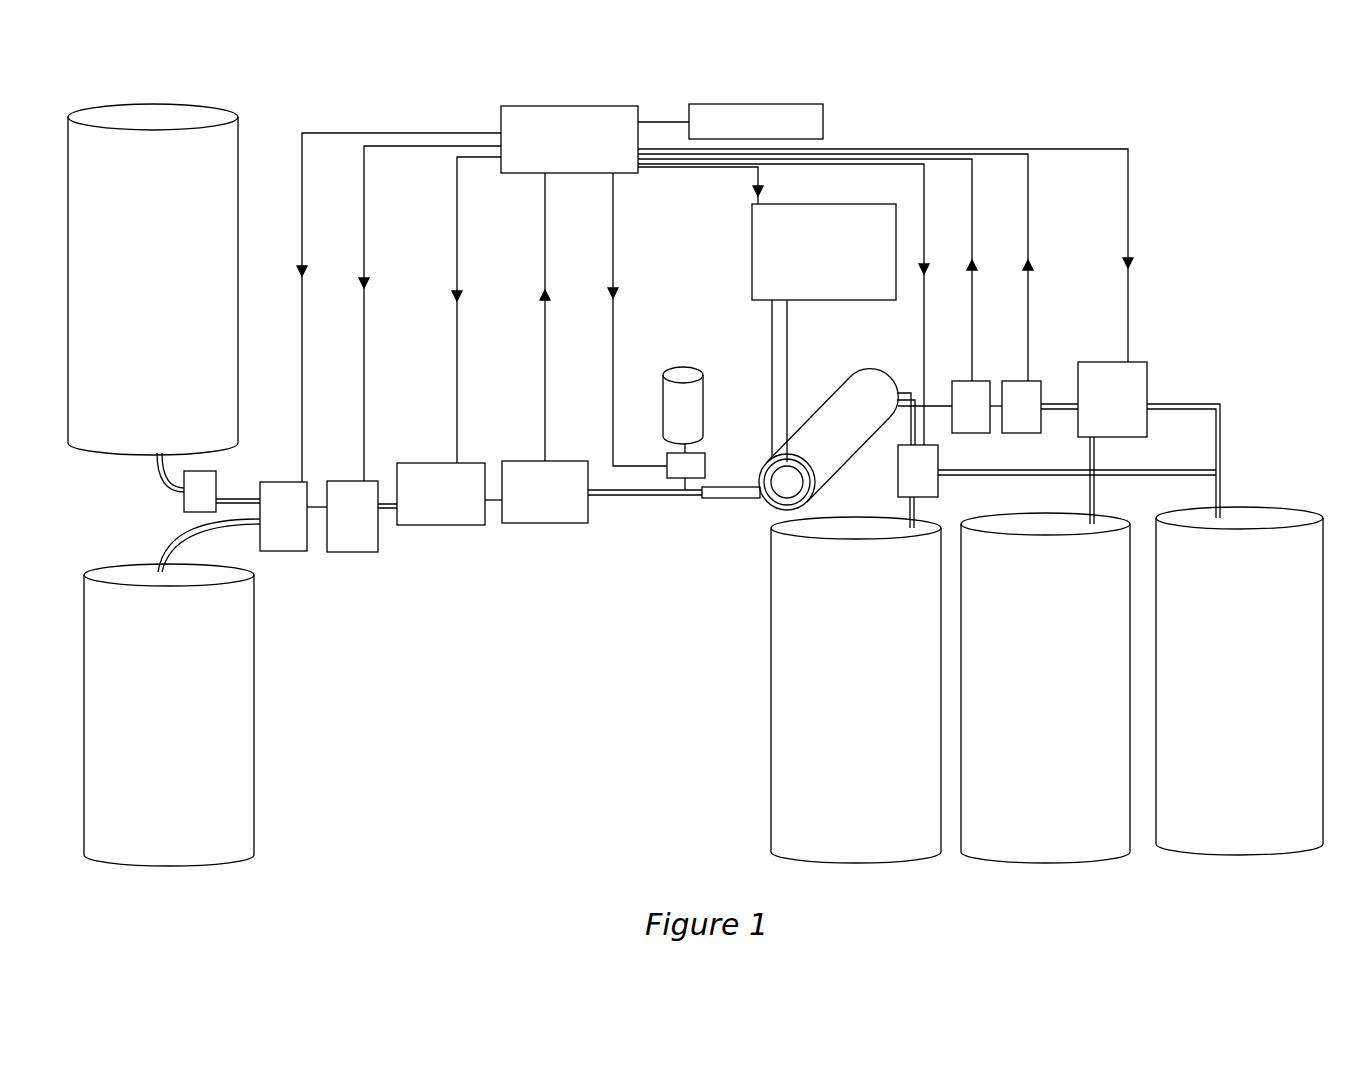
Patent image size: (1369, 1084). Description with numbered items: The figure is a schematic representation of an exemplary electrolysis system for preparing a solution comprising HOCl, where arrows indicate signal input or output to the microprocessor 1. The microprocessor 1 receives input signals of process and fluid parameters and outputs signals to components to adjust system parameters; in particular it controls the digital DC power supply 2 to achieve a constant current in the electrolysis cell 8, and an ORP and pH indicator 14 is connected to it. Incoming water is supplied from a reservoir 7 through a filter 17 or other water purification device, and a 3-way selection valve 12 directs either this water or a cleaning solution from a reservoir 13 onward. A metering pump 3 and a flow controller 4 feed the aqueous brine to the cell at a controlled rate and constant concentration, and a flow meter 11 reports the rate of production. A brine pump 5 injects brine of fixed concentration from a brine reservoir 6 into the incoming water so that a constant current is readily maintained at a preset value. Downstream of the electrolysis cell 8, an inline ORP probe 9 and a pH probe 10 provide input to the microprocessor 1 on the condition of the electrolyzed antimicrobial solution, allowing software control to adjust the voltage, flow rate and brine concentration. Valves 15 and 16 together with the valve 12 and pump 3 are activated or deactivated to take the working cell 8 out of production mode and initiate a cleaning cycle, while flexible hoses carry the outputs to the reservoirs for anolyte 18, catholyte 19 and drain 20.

The microprocessor 1 is at (500, 122).
The digital DC power supply 2 is at (752, 276).
The metering pump 3 is at (355, 481).
The flow controller 4 is at (430, 463).
The brine pump 5 is at (667, 458).
The brine reservoir 6 is at (663, 393).
The water reservoir 7 is at (238, 203).
The electrolysis cell 8 is at (863, 372).
The ORP probe 9 is at (965, 381).
The pH probe 10 is at (1020, 381).
The flow meter 11 is at (530, 461).
The 3-way selection valve 12 is at (300, 482).
The cleaning solution reservoir 13 is at (254, 693).
The ORP and pH indicator 14 is at (823, 120).
The valve 15 is at (898, 461).
The valve 16 is at (1112, 362).
The filter 17 is at (184, 497).
The anolyte reservoir 18 is at (1045, 860).
The catholyte reservoir 19 is at (858, 865).
The drain reservoir 20 is at (1238, 855).